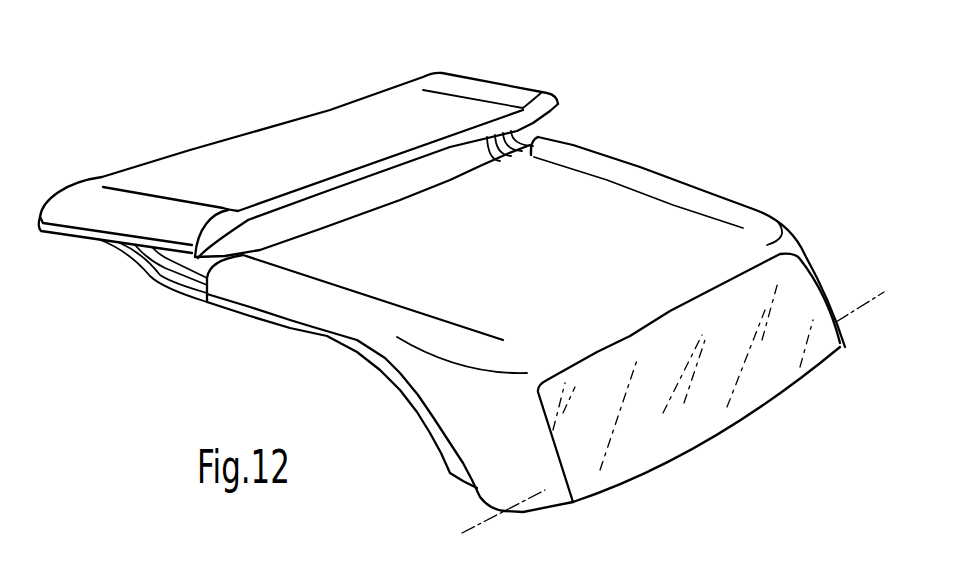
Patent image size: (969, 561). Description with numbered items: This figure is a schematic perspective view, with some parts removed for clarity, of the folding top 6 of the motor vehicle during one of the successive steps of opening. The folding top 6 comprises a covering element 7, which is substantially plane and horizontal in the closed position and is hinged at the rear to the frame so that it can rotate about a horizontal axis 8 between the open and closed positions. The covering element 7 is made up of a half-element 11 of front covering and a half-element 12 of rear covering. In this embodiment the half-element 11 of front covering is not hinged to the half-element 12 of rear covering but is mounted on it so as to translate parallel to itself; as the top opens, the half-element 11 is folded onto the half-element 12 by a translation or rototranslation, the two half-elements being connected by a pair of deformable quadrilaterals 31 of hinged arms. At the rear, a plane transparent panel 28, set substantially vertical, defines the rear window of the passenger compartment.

The folding top 6 is at (207, 354).
The covering element 7 is at (614, 94).
The horizontal axis 8 is at (479, 527).
The half-element of front covering 11 is at (303, 125).
The half-element of rear covering 12 is at (657, 203).
The plane transparent panel 28 is at (698, 438).
The deformable quadrilateral 31 is at (557, 121).